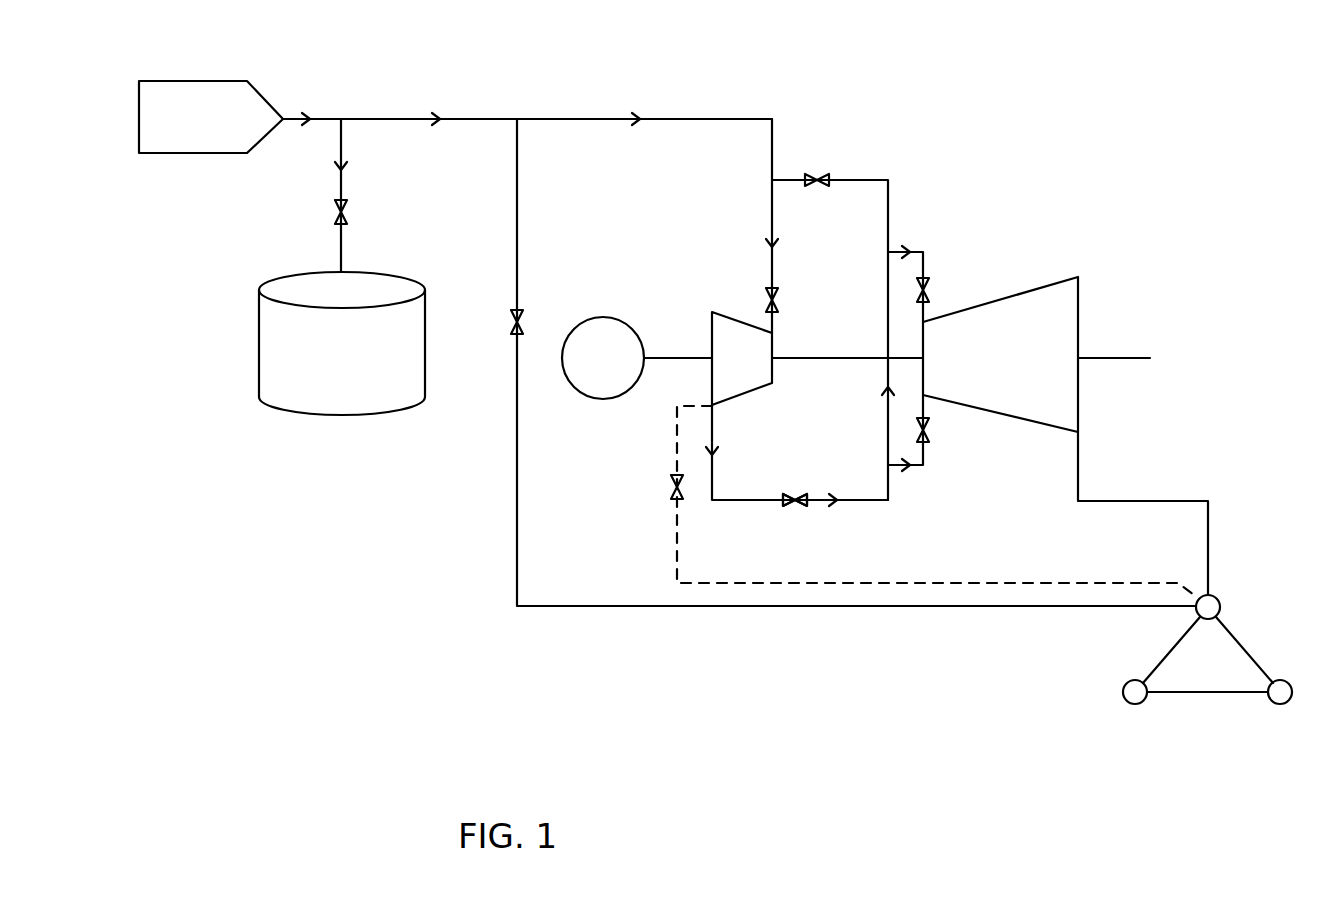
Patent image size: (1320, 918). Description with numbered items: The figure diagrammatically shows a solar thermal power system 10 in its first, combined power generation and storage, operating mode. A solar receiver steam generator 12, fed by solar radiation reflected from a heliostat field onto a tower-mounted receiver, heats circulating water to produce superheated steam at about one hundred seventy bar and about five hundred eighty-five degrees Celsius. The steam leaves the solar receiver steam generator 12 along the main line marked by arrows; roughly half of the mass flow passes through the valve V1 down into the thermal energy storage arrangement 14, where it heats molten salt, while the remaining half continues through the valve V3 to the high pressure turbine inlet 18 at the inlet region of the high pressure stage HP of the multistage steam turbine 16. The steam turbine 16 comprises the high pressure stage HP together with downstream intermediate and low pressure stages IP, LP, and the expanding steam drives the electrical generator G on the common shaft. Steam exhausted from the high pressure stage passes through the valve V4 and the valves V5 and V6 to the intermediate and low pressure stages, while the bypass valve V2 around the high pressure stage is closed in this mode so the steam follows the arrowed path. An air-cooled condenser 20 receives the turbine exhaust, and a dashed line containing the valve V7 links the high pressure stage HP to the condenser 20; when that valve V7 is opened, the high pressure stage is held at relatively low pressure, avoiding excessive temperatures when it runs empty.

The solar thermal power system 10 is at (272, 601).
The solar receiver steam generator 12 is at (193, 112).
The thermal energy storage arrangement 14 is at (337, 392).
The multistage steam turbine 16 is at (809, 395).
The high pressure turbine inlet 18 is at (785, 338).
The air-cooled condenser 20 is at (1207, 670).
The valve V1 is at (365, 195).
The valve V2 is at (833, 323).
The valve V3 is at (739, 217).
The valve V4 is at (795, 520).
The valve V5 is at (951, 288).
The valve V6 is at (903, 434).
The valve V7 is at (915, 502).